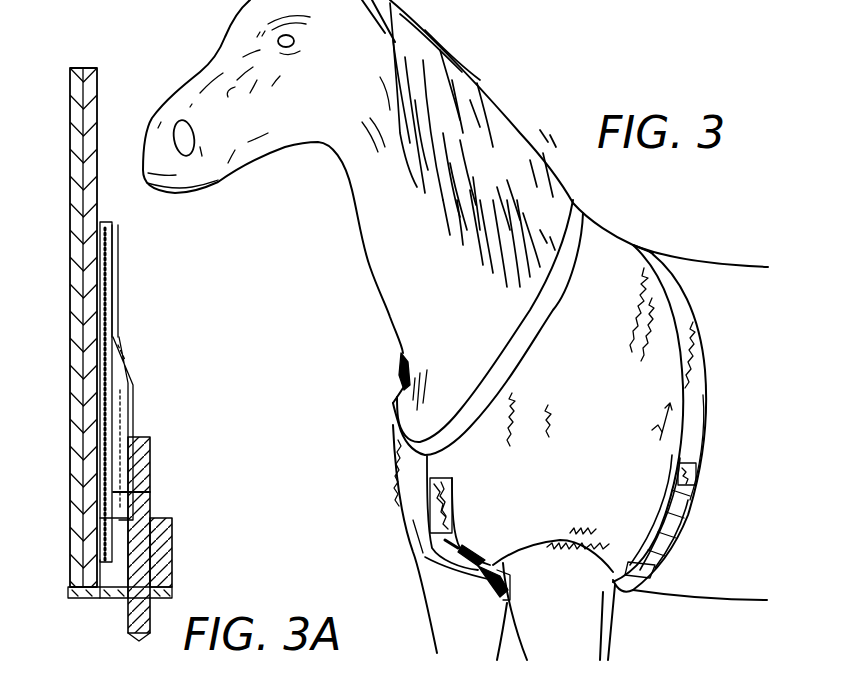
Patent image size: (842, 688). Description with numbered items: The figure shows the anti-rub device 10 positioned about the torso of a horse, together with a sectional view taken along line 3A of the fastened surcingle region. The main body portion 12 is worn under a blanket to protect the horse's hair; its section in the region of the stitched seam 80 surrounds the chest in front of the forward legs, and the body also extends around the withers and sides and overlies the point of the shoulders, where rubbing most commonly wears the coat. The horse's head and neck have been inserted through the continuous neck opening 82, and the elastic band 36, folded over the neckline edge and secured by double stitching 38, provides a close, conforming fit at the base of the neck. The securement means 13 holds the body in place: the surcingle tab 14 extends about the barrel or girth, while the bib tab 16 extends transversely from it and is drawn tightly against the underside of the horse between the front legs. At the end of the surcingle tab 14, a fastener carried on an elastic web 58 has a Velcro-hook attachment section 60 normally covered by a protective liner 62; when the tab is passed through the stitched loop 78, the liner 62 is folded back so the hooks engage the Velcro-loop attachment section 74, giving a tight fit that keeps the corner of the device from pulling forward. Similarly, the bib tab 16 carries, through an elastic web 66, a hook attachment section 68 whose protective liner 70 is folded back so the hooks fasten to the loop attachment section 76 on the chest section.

In FIG. 3, the anti-rub device 10 is at (588, 200).
In FIG. 3, the main body portion 12 is at (620, 258).
In FIG. 3A, the main body portion 12 is at (84, 68).
In FIG. 3, the securement means 13 is at (712, 390).
In FIG. 3, the surcingle tab 14 is at (698, 307).
In FIG. 3A, the surcingle tab 14 is at (97, 95).
In FIG. 3, the bib tab 16 is at (487, 577).
In FIG. 3, the elastic band 36 is at (533, 340).
In FIG. 3A, the double stitching 38 is at (133, 410).
In FIG. 3, the elastic web 58 is at (677, 530).
In FIG. 3, the attachment section 60 is at (683, 502).
In FIG. 3A, the attachment section 60 is at (118, 275).
In FIG. 3A, the protective liner 62 is at (150, 492).
In FIG. 3, the elastic web 66 is at (477, 550).
In FIG. 3, the attachment section 68 is at (443, 533).
In FIG. 3, the protective liner 70 is at (477, 556).
In FIG. 3, the attachment section 74 is at (680, 474).
In FIG. 3A, the attachment section 74 is at (100, 223).
In FIG. 3, the attachment section 76 is at (447, 490).
In FIG. 3, the stitched loop 78 is at (650, 572).
In FIG. 3A, the stitched loop 78 is at (172, 555).
In FIG. 3, the stitched seam 80 is at (430, 467).
In FIG. 3, the neck opening 82 is at (400, 385).
In FIG. 3, the section line 3A is at (690, 447).